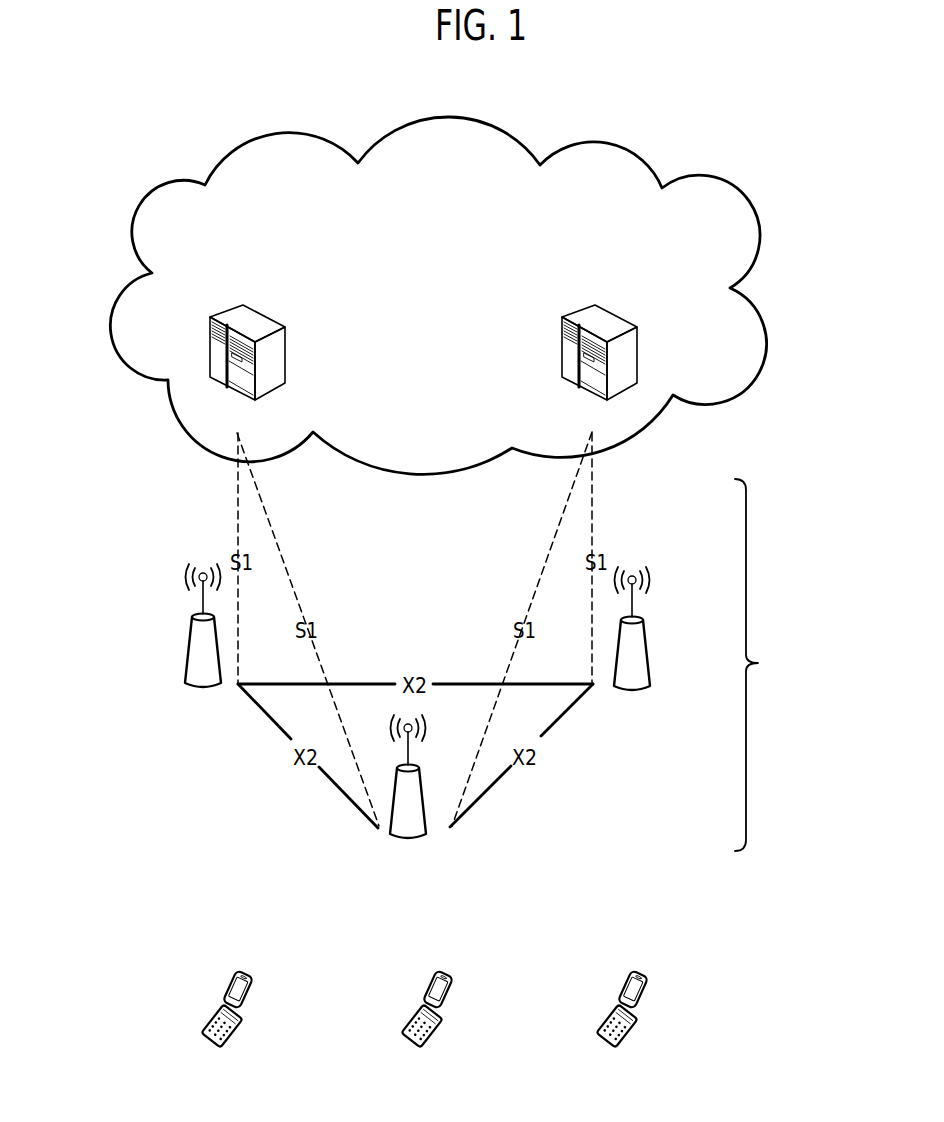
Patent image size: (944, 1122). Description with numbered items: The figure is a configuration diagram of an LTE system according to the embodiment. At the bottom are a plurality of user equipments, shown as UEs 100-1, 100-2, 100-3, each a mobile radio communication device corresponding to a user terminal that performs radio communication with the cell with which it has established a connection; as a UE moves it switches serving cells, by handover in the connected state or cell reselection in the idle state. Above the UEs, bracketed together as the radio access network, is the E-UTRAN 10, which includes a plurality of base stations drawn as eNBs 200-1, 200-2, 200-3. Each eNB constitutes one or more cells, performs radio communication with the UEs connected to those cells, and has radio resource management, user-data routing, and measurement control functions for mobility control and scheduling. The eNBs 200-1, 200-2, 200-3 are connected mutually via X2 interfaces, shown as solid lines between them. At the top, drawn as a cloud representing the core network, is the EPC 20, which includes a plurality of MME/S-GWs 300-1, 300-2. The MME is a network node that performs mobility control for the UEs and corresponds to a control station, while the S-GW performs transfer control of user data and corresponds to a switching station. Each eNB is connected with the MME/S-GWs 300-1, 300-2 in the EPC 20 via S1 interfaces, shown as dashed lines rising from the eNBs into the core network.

The EPC 20 is at (640, 153).
The MME/S-GW 300-1 is at (270, 313).
The MME/S-GW 300-2 is at (632, 290).
The eNB 200-1 is at (188, 650).
The eNB 200-2 is at (424, 812).
The eNB 200-3 is at (643, 632).
The E-UTRAN 10 is at (787, 665).
The UE 100-1 is at (246, 971).
The UE 100-2 is at (446, 971).
The UE 100-3 is at (641, 971).